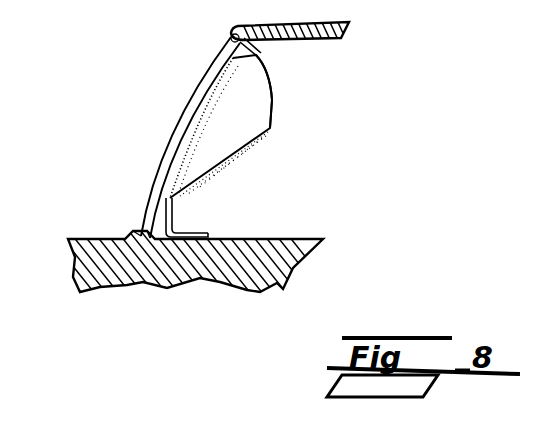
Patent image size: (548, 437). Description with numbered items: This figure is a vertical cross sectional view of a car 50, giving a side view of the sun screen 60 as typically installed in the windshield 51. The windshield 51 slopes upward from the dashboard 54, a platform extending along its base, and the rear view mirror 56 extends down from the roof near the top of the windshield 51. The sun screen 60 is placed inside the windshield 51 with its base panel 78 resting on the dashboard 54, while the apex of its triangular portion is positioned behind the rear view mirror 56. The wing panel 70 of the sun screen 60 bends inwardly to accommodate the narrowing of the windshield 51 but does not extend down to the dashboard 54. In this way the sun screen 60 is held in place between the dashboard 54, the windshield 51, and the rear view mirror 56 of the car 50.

The car 50 is at (197, 128).
The windshield 51 is at (197, 98).
The dashboard 54 is at (298, 238).
The rear view mirror 56 is at (254, 58).
The sun screen 60 is at (258, 148).
The wing panel 70 is at (272, 107).
The base panel 78 is at (211, 197).